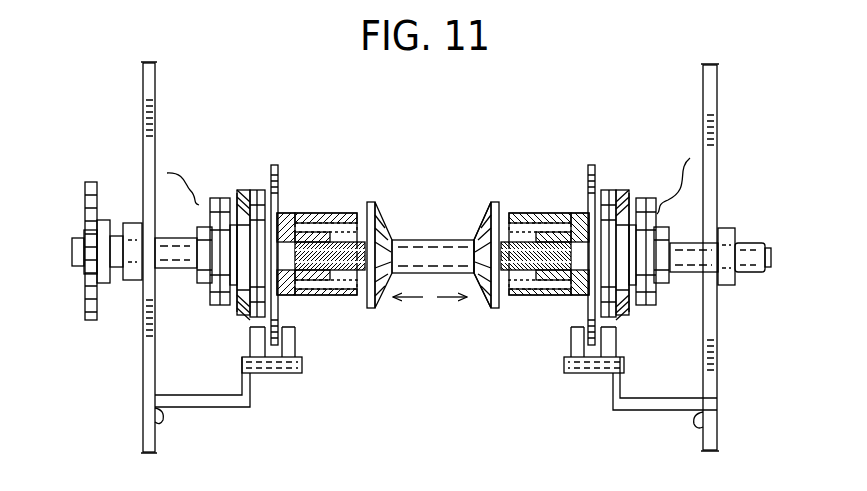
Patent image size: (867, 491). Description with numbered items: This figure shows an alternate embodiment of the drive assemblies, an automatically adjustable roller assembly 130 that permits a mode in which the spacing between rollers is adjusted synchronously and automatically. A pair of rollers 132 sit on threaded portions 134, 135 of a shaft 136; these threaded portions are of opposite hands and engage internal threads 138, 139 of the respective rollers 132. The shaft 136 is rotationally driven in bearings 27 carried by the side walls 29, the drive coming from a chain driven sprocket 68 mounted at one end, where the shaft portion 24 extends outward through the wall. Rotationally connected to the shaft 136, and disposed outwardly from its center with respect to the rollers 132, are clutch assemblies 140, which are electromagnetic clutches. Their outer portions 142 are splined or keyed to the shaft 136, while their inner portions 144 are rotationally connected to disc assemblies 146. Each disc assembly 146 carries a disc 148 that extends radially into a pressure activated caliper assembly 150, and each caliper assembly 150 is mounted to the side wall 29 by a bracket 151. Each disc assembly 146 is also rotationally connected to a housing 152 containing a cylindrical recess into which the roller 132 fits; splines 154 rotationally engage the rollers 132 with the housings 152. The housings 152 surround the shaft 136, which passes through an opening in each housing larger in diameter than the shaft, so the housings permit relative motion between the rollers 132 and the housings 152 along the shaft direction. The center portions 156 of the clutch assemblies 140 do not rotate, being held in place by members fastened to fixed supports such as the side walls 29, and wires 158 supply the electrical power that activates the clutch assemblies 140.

The axle shaft 24 is at (173, 268).
The bearings 27 is at (137, 222).
The side walls 29 is at (143, 95).
The chain driven sprocket 68 is at (90, 183).
The automatically adjustable roller assembly 130 is at (516, 303).
The rollers 132 is at (371, 205).
The threaded portion 134 is at (338, 240).
The threaded portion 135 is at (525, 240).
The shaft 136 is at (433, 243).
The internal threads 138 is at (303, 296).
The internal threads 139 is at (553, 272).
The clutch assemblies 140 is at (237, 192).
The outer portions 142 is at (205, 287).
The inner portions 144 is at (245, 188).
The disc assemblies 146 is at (260, 188).
The discs 148 is at (278, 170).
The pressure activated caliper assemblies 150 is at (303, 346).
The brackets 151 is at (215, 408).
The housing 152 is at (332, 297).
The splines 154 is at (330, 216).
The center portions 156 is at (212, 300).
The wires 158 is at (192, 163).